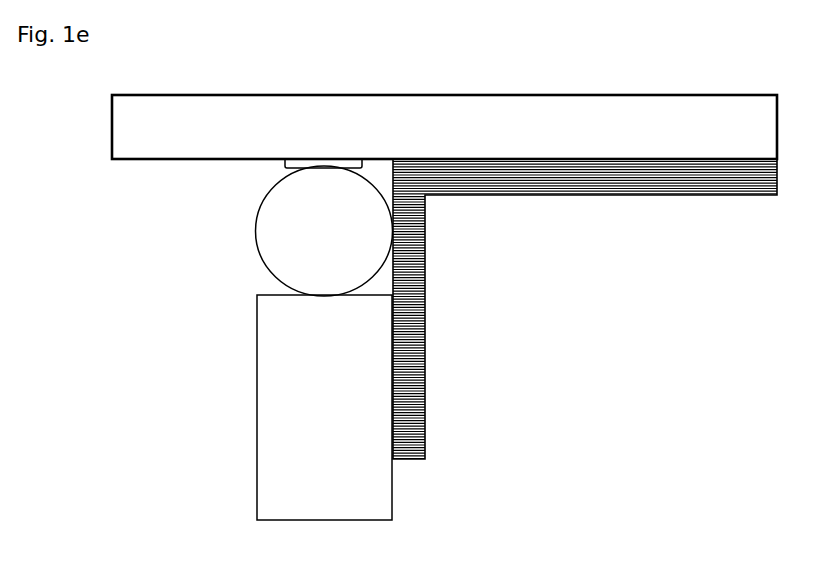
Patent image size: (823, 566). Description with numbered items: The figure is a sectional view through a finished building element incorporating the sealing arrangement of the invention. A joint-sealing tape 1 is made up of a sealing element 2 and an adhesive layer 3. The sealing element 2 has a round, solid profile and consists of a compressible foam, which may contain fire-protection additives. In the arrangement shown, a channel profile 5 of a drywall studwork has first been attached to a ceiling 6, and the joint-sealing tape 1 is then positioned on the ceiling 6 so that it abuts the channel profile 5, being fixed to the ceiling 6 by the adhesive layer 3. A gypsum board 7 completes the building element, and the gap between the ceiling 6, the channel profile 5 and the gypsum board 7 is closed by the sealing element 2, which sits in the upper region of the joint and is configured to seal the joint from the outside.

The joint-sealing tape 1 is at (254, 246).
The sealing element 2 is at (323, 233).
The adhesive layer 3 is at (320, 160).
The channel profile 5 is at (553, 175).
The ceiling 6 is at (697, 132).
The gypsum board 7 is at (353, 507).